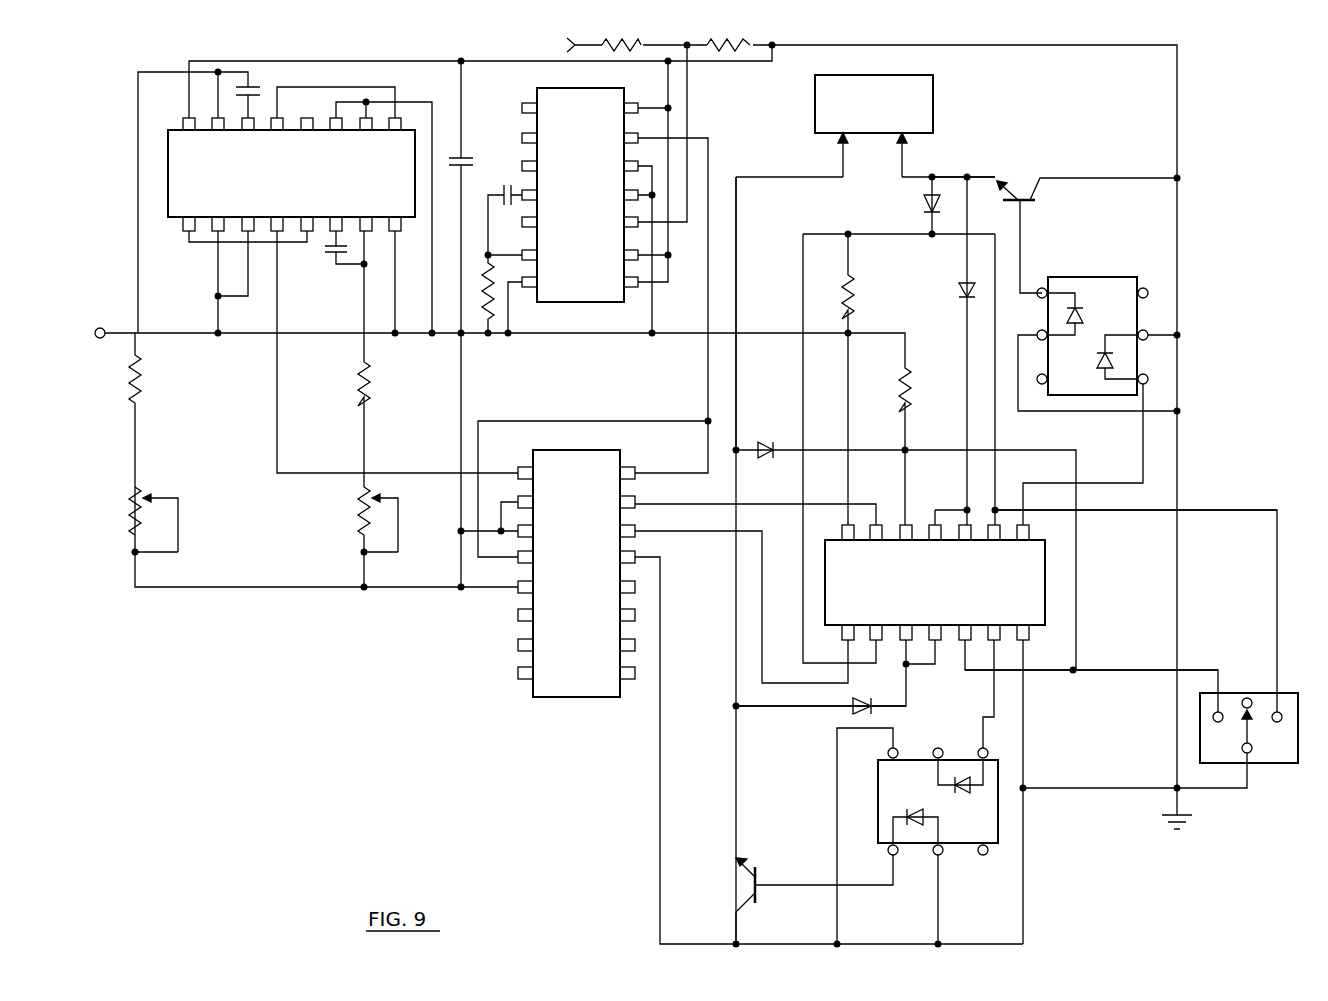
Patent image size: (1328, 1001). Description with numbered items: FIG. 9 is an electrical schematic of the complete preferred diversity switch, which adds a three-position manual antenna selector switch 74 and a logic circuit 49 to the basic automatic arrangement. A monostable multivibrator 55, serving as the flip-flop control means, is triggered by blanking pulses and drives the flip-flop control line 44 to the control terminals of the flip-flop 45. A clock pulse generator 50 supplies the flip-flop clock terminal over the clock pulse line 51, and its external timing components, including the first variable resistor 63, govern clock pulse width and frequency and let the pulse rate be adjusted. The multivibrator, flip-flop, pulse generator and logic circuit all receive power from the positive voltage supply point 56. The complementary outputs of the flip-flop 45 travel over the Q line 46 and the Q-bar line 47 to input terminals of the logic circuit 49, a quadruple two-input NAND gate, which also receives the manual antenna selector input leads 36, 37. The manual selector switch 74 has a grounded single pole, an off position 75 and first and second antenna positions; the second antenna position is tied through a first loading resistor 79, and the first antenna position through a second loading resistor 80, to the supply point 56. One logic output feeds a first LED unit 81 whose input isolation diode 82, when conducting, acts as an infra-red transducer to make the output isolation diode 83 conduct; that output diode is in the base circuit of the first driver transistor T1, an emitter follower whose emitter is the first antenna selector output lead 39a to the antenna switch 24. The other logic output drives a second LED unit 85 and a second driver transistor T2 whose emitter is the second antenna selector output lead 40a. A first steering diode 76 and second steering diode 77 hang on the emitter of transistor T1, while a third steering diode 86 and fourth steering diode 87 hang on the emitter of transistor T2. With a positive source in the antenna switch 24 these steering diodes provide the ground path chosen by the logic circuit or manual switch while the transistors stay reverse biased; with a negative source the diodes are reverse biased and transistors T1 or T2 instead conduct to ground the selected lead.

The clock pulse generator 50 is at (170, 203).
The monostable multivibrator 55 is at (580, 299).
The flip-flop 45 is at (576, 690).
The logic circuit 49 is at (1048, 592).
The antenna switch 24 is at (874, 104).
The first antenna selector output lead 39a is at (767, 177).
The second antenna selector output lead 40a is at (967, 177).
The fourth steering diode 87 is at (924, 205).
The third steering diode 86 is at (963, 297).
The first loading resistor 79 is at (855, 290).
The second loading resistor 80 is at (910, 376).
The second driver transistor T2 is at (1022, 205).
The first driver transistor T1 is at (814, 899).
The second LED unit 85 is at (1114, 277).
The second steering diode 77 is at (765, 442).
The Q line 46 is at (770, 504).
The Q-bar line 47 is at (688, 533).
The flip-flop control line 44 is at (708, 370).
The clock pulse line 51 is at (318, 473).
The first variable resistor 63 is at (131, 508).
The positive voltage supply point 56 is at (96, 341).
The manual antenna selector input lead 36 is at (1135, 510).
The manual antenna selector input lead 37 is at (1108, 672).
The first steering diode 76 is at (853, 711).
The first LED unit 81 is at (920, 801).
The input isolation diode 82 is at (972, 795).
The output isolation diode 83 is at (915, 817).
The manual antenna selector switch 74 is at (1256, 734).
The off position 75 is at (1255, 698).